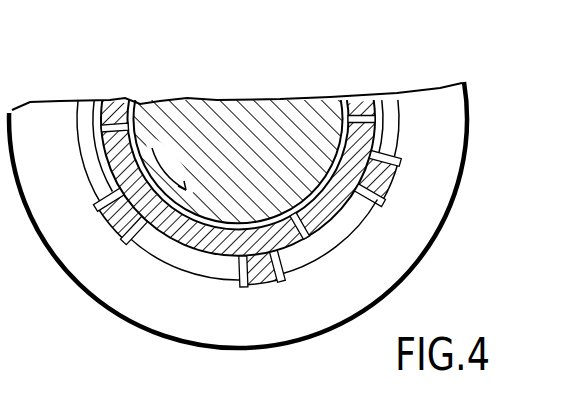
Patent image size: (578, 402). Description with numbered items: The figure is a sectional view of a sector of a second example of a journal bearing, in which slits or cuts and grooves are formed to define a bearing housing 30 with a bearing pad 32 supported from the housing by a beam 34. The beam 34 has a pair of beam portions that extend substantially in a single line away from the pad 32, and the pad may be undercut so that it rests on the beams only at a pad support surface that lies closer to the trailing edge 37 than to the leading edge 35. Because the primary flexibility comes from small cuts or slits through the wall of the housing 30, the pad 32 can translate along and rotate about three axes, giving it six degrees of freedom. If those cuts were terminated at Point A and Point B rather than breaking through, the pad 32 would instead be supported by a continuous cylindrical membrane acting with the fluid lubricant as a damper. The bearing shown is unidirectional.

The bearing housing 30 is at (443, 136).
The bearing pad 32 is at (360, 143).
The beam 34 is at (380, 175).
The leading edge 35 is at (336, 223).
The trailing edge 37 is at (373, 125).
The Point A is at (238, 277).
The Point B is at (288, 264).